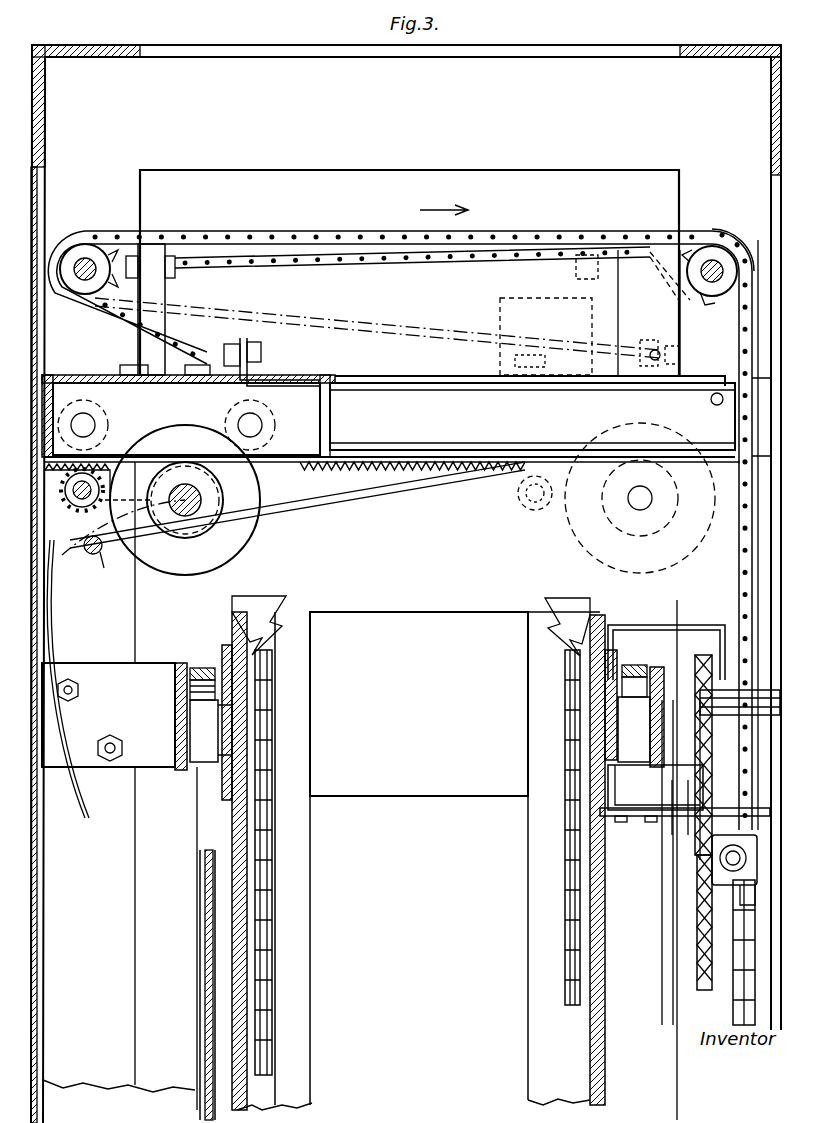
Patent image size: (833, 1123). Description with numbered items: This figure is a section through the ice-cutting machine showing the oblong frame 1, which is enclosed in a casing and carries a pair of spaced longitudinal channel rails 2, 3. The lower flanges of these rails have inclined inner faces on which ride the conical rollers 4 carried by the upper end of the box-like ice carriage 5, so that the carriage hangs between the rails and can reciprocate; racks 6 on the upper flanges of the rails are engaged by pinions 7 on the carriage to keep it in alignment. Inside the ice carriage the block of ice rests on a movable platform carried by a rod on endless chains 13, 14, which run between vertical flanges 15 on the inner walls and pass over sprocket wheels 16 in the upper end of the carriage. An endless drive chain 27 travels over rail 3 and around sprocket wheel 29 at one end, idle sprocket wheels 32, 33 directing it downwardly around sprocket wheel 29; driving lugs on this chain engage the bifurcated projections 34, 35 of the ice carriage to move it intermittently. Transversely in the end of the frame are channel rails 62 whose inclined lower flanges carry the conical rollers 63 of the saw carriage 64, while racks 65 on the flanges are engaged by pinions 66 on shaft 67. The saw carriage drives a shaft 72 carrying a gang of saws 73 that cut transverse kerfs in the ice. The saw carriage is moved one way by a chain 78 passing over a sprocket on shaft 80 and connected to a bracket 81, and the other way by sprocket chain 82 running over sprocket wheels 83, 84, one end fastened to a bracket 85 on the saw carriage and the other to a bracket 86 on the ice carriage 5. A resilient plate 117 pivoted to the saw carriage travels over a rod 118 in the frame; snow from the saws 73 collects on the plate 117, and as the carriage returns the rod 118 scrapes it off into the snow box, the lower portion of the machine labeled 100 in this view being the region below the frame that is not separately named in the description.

The oblong frame 1 is at (406, 584).
The channel rail 2 is at (172, 748).
The channel rail 3 is at (655, 787).
The conical rollers 4 is at (200, 722).
The ice carriage 5 is at (418, 861).
The racks 6 is at (202, 672).
The pinions 7 is at (195, 686).
The endless chain 13 is at (262, 848).
The endless chain 14 is at (570, 898).
The flanges 15 is at (300, 872).
The sprocket wheels 16 is at (262, 676).
The endless chain 27 is at (710, 660).
The sprocket wheel 29 is at (697, 945).
The idle sprocket wheel 32 is at (735, 848).
The idle sprocket wheel 33 is at (740, 703).
The bifurcated projection 34 is at (655, 627).
The bifurcated projection 35 is at (680, 792).
The channel rails 62 is at (390, 420).
The conical rollers 63 is at (105, 418).
The saw carriage 64 is at (112, 378).
The racks 65 is at (478, 470).
The pinions 66 is at (123, 522).
The shaft 67 is at (76, 504).
The shaft 72 is at (185, 516).
The saws 73 is at (190, 576).
The chain 78 is at (455, 250).
The shaft 80 is at (712, 262).
The bracket 81 is at (158, 288).
The sprocket chain 82 is at (358, 232).
The sprocket wheel 83 is at (725, 250).
The sprocket wheel 84 is at (88, 250).
The bracket 85 is at (250, 340).
The bracket 86 is at (718, 860).
The base 100 is at (129, 985).
The resilient plate 117 is at (345, 492).
The rod 118 is at (101, 564).